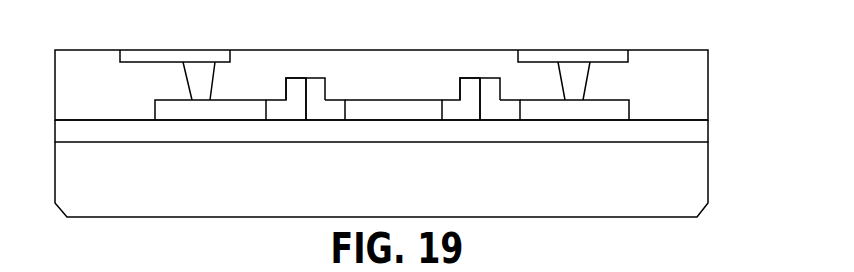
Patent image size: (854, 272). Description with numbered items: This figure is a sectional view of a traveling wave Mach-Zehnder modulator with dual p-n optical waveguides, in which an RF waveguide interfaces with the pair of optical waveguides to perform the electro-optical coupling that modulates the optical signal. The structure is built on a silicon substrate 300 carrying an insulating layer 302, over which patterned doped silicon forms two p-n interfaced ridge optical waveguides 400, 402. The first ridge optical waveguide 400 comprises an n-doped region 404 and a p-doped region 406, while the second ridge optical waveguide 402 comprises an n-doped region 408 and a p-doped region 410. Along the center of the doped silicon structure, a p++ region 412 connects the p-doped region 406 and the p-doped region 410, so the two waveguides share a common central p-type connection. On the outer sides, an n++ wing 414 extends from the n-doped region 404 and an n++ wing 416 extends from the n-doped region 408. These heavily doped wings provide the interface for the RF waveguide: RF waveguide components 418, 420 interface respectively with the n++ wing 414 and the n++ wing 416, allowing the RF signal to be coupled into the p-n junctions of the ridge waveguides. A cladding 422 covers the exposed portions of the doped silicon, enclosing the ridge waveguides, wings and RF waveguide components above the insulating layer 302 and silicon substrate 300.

The silicon substrate 300 is at (700, 187).
The insulating layer 302 is at (700, 133).
The ridge optical waveguide 400 is at (306, 63).
The ridge optical waveguide 402 is at (480, 63).
The n-doped region 404 is at (286, 90).
The p-doped region 406 is at (325, 97).
The n-doped region 408 is at (500, 97).
The p-doped region 410 is at (460, 91).
The p++ region 412 is at (418, 98).
The n++ wing 414 is at (178, 98).
The n++ wing 416 is at (590, 99).
The RF waveguide component 418 is at (120, 55).
The RF waveguide component 420 is at (628, 55).
The cladding 422 is at (700, 92).